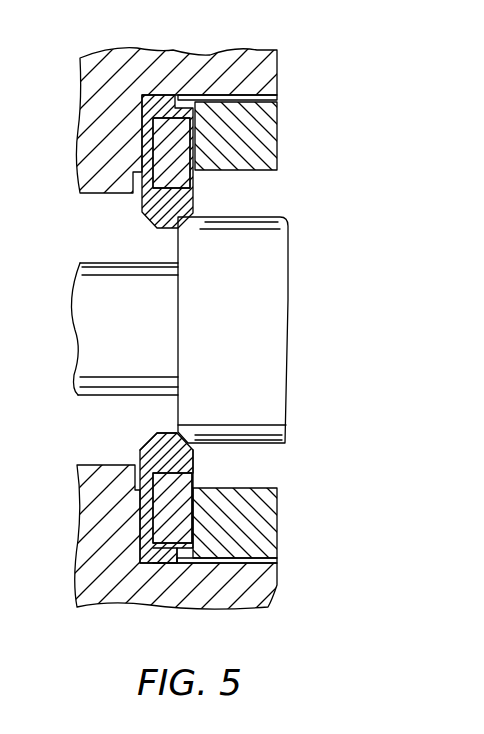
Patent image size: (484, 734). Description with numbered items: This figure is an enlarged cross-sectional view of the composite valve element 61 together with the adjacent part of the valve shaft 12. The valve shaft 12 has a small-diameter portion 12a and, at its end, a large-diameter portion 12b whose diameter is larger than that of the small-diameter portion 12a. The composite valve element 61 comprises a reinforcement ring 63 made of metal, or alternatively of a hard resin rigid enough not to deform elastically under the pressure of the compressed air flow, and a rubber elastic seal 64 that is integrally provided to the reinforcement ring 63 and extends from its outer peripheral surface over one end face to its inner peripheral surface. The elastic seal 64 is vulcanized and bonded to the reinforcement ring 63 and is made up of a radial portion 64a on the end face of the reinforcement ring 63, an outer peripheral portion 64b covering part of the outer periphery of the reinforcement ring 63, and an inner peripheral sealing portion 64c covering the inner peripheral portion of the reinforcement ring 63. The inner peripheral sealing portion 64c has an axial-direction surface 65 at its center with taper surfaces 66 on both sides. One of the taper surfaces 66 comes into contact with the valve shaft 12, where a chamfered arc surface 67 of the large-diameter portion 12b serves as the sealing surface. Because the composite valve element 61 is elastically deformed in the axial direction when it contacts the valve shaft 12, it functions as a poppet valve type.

The valve shaft 12 is at (196, 319).
The small-diameter portion 12a is at (110, 355).
The large-diameter portion 12b is at (243, 358).
The composite valve element 61 is at (183, 98).
The reinforcement ring 63 is at (187, 152).
The elastic seal 64 is at (141, 152).
The radial portion 64a is at (141, 533).
The outer peripheral portion 64b is at (163, 558).
The inner peripheral sealing portion 64c is at (178, 467).
The axial-direction surface 65 is at (170, 432).
The taper surface 66 is at (150, 438).
The chamfered arc surface 67 is at (193, 220).